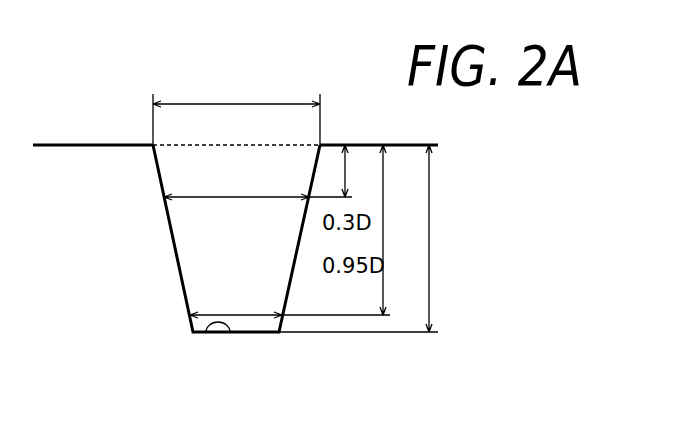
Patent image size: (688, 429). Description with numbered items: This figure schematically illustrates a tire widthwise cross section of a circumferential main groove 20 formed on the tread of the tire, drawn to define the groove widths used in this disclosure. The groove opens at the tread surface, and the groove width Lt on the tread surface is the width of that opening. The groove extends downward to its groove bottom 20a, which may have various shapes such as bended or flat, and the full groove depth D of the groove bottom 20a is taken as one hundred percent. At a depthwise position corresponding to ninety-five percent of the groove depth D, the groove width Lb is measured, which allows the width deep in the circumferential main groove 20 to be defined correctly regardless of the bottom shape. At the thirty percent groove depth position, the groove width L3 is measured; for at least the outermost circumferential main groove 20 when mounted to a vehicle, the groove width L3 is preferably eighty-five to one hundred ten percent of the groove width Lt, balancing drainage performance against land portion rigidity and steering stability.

The circumferential main groove 20 is at (251, 259).
The groove bottom 20a is at (208, 333).
The groove width on the tread surface Lt is at (236, 111).
The groove width at the 30% groove depth position L3 is at (258, 186).
The groove width at the depthwise position 0.95D Lb is at (290, 299).
The groove depth D is at (364, 238).